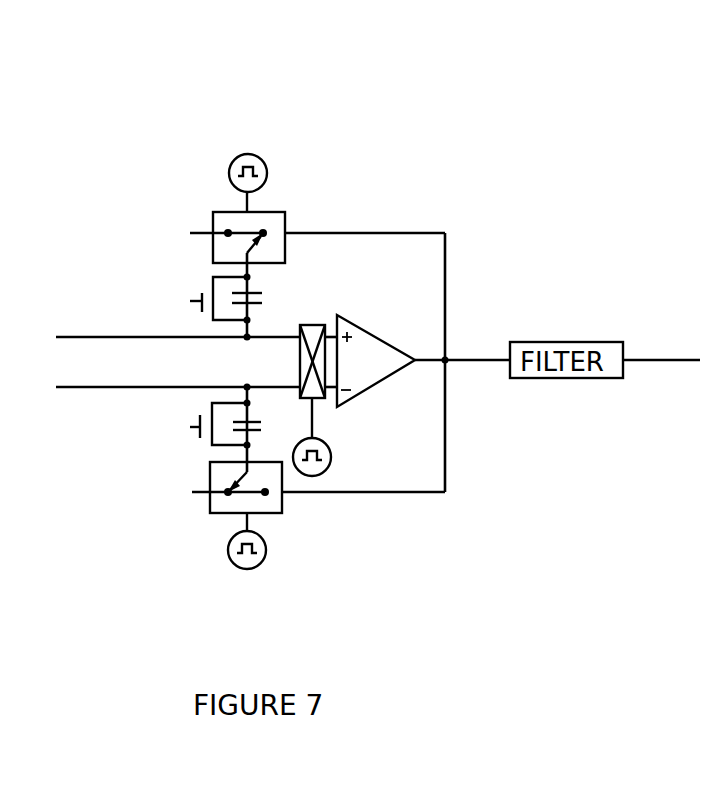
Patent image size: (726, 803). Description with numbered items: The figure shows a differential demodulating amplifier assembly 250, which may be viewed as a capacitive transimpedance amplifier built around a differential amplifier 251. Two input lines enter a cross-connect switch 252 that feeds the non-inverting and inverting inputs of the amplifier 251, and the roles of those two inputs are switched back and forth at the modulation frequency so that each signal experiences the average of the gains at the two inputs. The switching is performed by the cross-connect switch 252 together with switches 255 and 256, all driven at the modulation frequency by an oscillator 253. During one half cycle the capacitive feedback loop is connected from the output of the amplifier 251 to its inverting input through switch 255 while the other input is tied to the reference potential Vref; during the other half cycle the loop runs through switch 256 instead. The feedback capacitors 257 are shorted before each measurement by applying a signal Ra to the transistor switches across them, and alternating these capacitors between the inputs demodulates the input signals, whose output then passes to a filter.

The differential demodulating amplifier assembly 250 is at (126, 128).
The differential amplifier 251 is at (403, 352).
The cross-connect switch 252 is at (307, 323).
The oscillator 253 is at (266, 165).
The switch 255 is at (285, 220).
The switch 256 is at (281, 506).
The feedback capacitors 257 is at (253, 292).